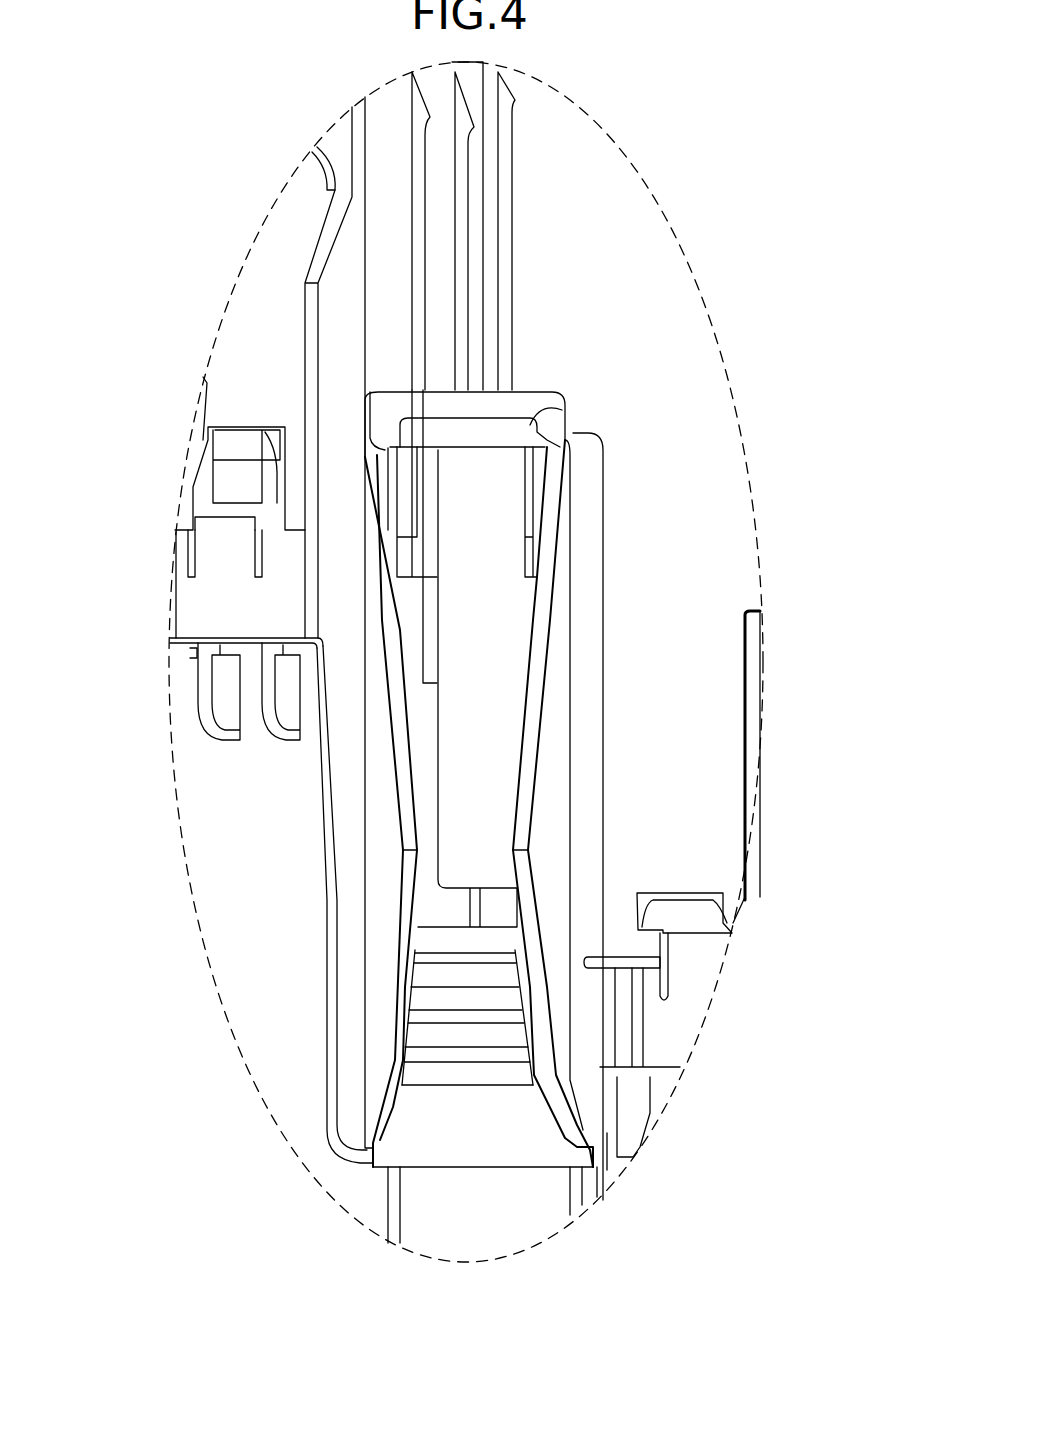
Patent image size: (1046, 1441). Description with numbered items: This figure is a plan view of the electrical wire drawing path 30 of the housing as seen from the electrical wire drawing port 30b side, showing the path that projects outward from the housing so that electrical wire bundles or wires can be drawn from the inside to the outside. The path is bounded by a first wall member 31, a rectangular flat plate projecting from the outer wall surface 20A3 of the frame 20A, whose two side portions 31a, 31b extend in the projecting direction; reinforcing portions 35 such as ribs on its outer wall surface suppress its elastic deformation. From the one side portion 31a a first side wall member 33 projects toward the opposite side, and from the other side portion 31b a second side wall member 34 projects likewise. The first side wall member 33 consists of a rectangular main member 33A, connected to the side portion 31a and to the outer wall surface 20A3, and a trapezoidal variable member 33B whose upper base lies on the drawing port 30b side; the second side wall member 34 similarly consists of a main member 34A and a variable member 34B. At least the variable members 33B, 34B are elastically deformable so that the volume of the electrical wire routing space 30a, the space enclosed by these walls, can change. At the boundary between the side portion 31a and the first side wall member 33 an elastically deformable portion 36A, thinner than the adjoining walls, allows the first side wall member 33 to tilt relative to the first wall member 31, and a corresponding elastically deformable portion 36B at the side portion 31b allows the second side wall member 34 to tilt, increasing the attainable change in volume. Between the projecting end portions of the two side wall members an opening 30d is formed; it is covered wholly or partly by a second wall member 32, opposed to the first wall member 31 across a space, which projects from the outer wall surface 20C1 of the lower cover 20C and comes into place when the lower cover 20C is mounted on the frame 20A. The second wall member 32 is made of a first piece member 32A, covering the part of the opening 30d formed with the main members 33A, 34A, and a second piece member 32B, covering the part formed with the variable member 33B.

The frame 20A is at (752, 576).
The outer wall surface of the frame 20A3 is at (635, 273).
The lower cover 20C is at (219, 622).
The outer wall surface of the lower cover 20C1 is at (191, 825).
The electrical wire drawing path 30 is at (642, 903).
The electrical wire routing space 30a is at (478, 652).
The electrical wire drawing port 30b is at (515, 607).
The opening 30d is at (522, 1100).
The first wall member 31 is at (471, 530).
The one side portion of the first wall member 31a is at (372, 405).
The other side portion of the first wall member 31b is at (553, 400).
The second wall member 32 is at (490, 1161).
The first piece member 32A is at (443, 1167).
The second piece member 32B is at (495, 1117).
The first side wall member 33 is at (217, 811).
The main member of the first side wall member 33A is at (365, 772).
The variable member of the first side wall member 33B is at (383, 815).
The second side wall member 34 is at (712, 803).
The main member of the second side wall member 34A is at (587, 772).
The variable member of the second side wall member 34B is at (553, 818).
The reinforcing portion 35 is at (425, 185).
The elastically deformable portion 36A is at (362, 440).
The elastically deformable portion 36B is at (575, 432).